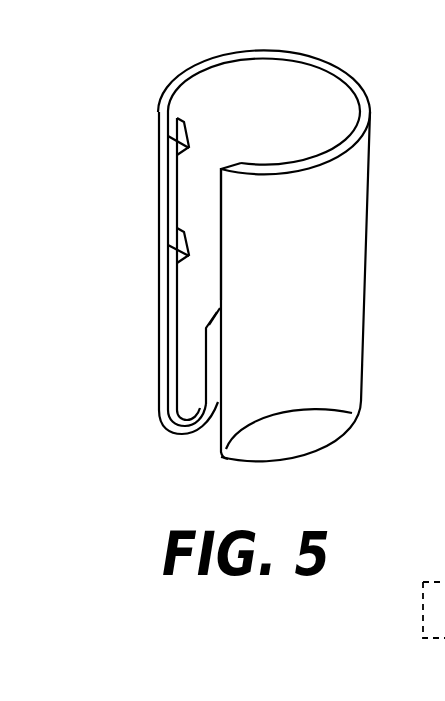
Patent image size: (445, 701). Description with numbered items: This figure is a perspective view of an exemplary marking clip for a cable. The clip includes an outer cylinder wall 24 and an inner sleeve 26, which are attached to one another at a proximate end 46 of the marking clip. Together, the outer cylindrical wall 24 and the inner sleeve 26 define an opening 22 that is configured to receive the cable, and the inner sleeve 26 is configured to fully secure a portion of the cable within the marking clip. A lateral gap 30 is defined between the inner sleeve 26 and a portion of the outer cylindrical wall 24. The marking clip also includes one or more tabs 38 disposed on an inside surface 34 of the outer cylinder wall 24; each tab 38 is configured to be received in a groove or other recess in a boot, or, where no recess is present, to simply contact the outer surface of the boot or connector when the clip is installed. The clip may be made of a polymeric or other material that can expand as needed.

The opening 22 is at (203, 428).
The outer cylinder wall 24 is at (178, 316).
The inner sleeve 26 is at (213, 357).
The lateral gap 30 is at (188, 377).
The inside surface 34 is at (178, 182).
The tab 38 is at (160, 133).
The proximate end 46 is at (293, 462).